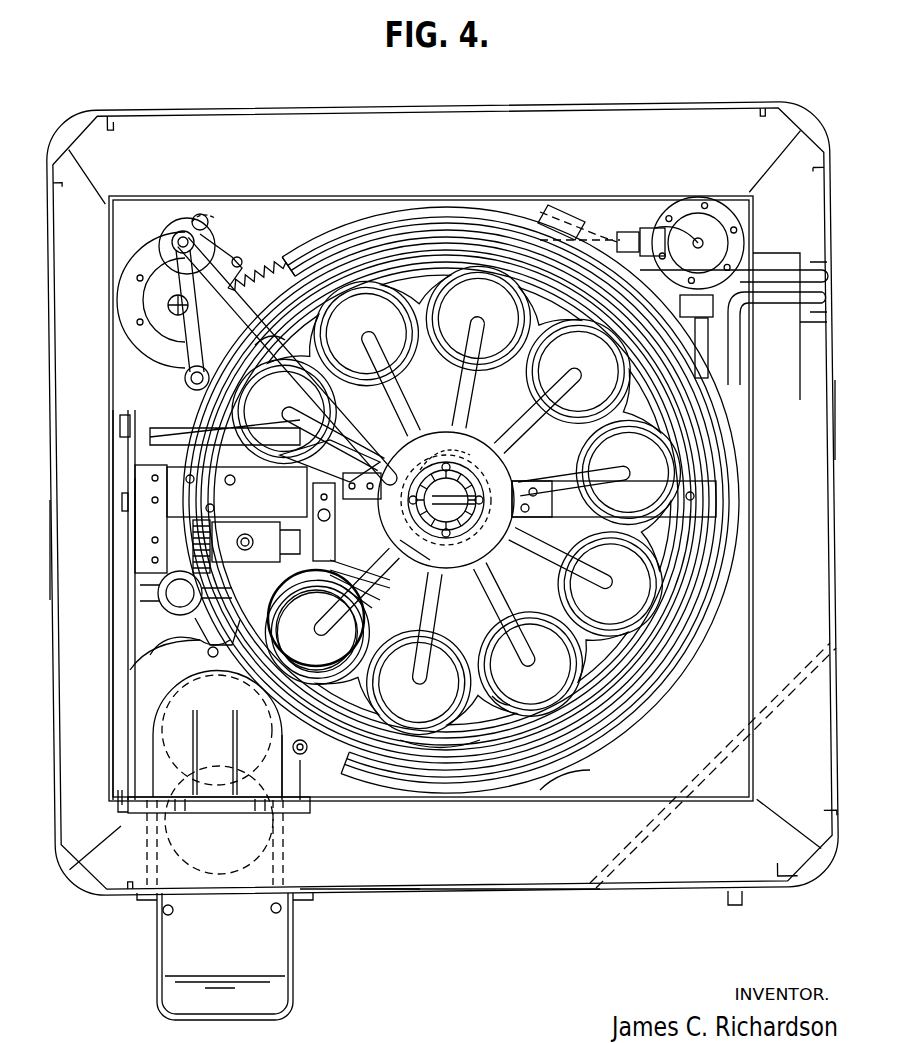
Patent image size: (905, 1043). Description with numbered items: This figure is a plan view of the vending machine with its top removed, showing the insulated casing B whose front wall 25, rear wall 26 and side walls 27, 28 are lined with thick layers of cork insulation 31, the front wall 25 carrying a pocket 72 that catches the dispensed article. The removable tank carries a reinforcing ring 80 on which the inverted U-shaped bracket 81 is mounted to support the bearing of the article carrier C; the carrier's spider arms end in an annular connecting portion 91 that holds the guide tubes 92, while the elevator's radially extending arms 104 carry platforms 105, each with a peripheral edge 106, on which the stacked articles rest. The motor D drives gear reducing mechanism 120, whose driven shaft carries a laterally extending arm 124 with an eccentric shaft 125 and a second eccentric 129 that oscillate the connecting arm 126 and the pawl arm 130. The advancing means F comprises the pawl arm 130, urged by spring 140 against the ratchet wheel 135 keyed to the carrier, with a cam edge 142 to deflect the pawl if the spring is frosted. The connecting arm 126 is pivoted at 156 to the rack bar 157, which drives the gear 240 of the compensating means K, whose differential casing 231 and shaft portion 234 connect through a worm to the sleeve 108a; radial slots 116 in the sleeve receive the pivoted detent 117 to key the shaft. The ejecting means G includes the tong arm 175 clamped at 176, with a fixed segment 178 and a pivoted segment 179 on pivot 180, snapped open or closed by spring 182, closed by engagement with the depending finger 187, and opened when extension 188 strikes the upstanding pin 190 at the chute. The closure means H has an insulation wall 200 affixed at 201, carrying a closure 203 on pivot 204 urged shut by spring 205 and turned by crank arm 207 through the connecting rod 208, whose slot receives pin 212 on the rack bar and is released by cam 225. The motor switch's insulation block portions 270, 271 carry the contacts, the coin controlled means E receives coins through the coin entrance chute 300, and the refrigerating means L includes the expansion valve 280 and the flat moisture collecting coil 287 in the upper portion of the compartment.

The rear wall 26 is at (272, 108).
The insulation layers 31 is at (434, 492).
The flat coil 287 is at (346, 218).
The expansion valve 280 is at (720, 240).
The side wall 28 is at (834, 418).
The second eccentric 129 is at (172, 242).
The eccentric shaft 125 is at (210, 222).
The laterally extending arm 124 is at (222, 258).
The spring 140 is at (270, 258).
The pawl arm 130 is at (234, 297).
The gear reducing mechanism 120 is at (163, 306).
The motor D is at (128, 298).
The connecting arm 126 is at (172, 346).
The pivot 156 is at (185, 380).
The carrier advancing means F is at (270, 362).
The pin 212 is at (119, 427).
The rack bar 157 is at (192, 442).
The cam edge 142 is at (335, 460).
The sleeve 108a is at (448, 470).
The radial slots 116 is at (480, 480).
The pivoted detent 117 is at (534, 499).
The inverted U-shaped bracket 81 is at (614, 499).
The cam 225 is at (120, 504).
The compensating means K is at (237, 492).
The gear 240 is at (222, 530).
The differential casing 231 is at (268, 530).
The differential shaft portion 234 is at (347, 517).
The insulation block portion 270 is at (150, 525).
The side wall 27 is at (52, 550).
The insulation block portion 271 is at (152, 546).
The extension 188 is at (428, 548).
The ratchet wheel 135 is at (446, 500).
The connecting rod 208 is at (126, 583).
The pivot 180 is at (316, 618).
The fixed segment 178 is at (312, 614).
The depending finger 187 is at (372, 580).
The pivoted segment 179 is at (364, 602).
The platform 105 is at (451, 500).
The radially extending arms 104 is at (578, 570).
The peripheral edge 106 is at (507, 690).
The guide tubes 92 is at (660, 640).
The annular connecting portion 91 is at (600, 690).
The reinforcing ring 80 is at (660, 682).
The motor control closure means H is at (124, 637).
The clamp 176 is at (172, 614).
The spring 182 is at (216, 631).
The article ejecting means G is at (165, 655).
The attachment 201 is at (215, 651).
The tong arm 175 is at (227, 659).
The closure 203 is at (215, 778).
The spring 205 is at (196, 748).
The upstanding pin 190 is at (308, 747).
The insulation wall 200 is at (290, 788).
The crank arm 207 is at (118, 800).
The pivot 204 is at (302, 812).
The article carrier C is at (446, 755).
The refrigerating means L is at (565, 803).
The insulated casing B is at (395, 900).
The coin controlled means E is at (774, 896).
The coin entrance chute 300 is at (733, 908).
The pocket 72 is at (280, 950).
The front wall 25 is at (470, 889).